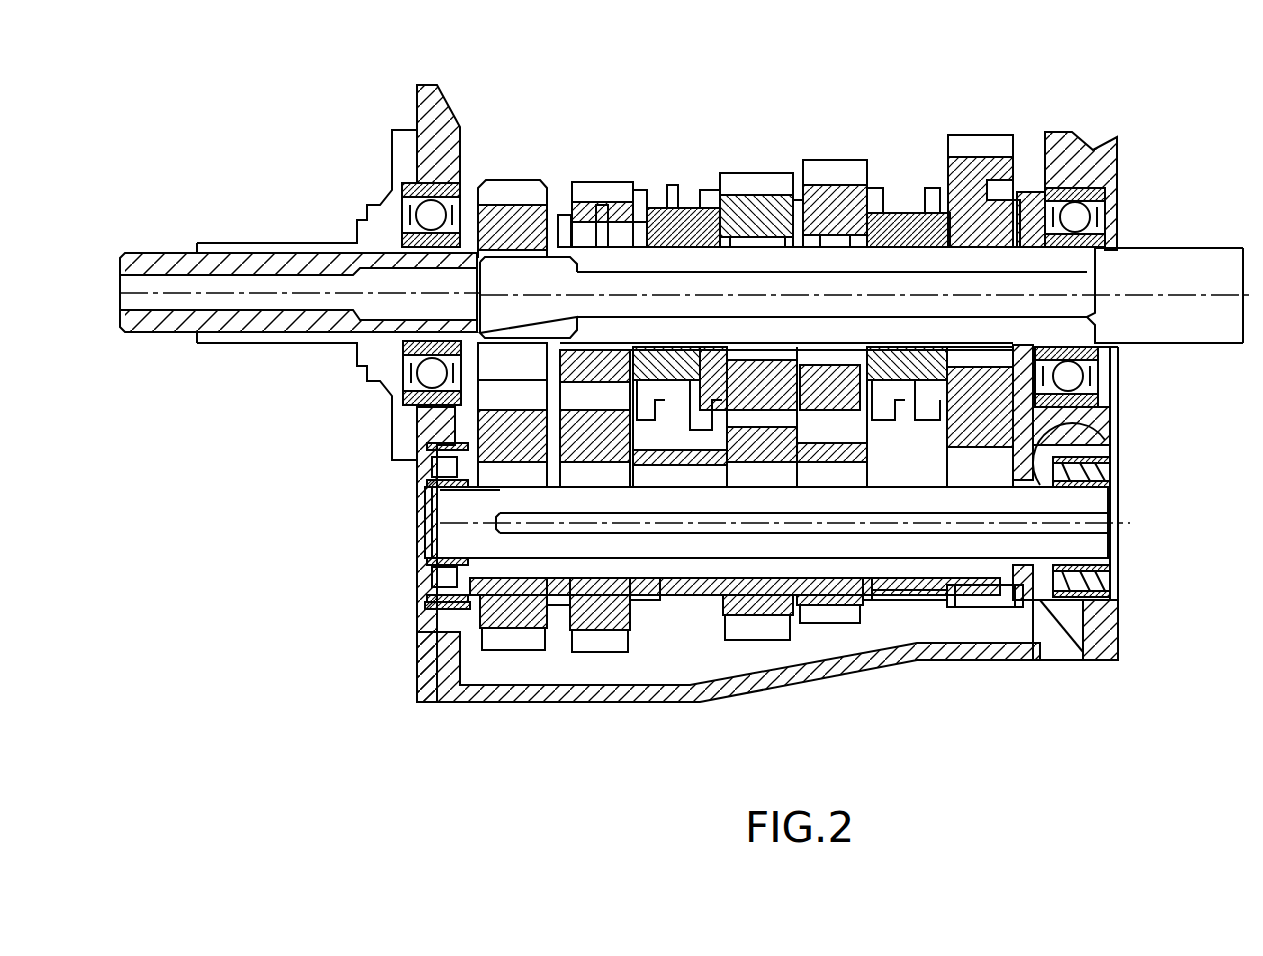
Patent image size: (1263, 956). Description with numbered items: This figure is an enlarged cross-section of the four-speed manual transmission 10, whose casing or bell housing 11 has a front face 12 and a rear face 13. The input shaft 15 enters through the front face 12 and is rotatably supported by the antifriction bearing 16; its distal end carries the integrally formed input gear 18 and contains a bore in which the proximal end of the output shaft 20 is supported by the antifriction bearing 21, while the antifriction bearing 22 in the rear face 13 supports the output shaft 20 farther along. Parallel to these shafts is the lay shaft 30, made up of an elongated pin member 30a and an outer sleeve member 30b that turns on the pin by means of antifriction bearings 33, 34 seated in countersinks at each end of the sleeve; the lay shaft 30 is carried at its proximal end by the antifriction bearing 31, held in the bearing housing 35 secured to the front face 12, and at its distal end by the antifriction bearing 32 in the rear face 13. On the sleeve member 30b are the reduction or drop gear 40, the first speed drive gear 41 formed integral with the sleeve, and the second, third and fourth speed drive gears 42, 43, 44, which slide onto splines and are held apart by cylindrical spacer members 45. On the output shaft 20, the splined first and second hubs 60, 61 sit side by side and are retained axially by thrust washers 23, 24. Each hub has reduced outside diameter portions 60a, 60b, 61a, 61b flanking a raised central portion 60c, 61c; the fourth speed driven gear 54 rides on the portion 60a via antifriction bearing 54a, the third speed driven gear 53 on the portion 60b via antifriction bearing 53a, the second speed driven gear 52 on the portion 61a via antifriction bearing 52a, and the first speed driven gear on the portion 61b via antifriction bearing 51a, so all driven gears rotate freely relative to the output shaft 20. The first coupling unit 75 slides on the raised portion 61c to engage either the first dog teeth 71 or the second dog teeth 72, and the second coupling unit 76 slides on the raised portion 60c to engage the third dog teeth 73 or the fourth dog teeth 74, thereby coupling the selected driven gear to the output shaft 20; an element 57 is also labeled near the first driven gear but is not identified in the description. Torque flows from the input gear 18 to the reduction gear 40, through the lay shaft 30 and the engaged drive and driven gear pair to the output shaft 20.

The manual transmission 10 is at (288, 187).
The casing 11 is at (945, 655).
The front face 12 is at (417, 655).
The rear face 13 is at (1120, 625).
The input shaft 15 is at (145, 262).
The antifriction bearing 16 is at (400, 183).
The input gear 18 is at (508, 190).
The output shaft 20 is at (1160, 267).
The antifriction bearing 21 is at (520, 237).
The antifriction bearing 22 is at (1110, 390).
The thrust washer 23 is at (567, 220).
The thrust washer 24 is at (1032, 247).
The lay shaft 30 is at (1082, 506).
The pin member 30a is at (438, 546).
The outer sleeve member 30b is at (883, 570).
The antifriction bearing 31 is at (423, 590).
The antifriction bearing 32 is at (1100, 573).
The antifriction bearing 33 is at (470, 492).
The antifriction bearing 34 is at (1103, 443).
The bearing housing 35 is at (415, 478).
The reduction gear 40 is at (493, 640).
The first speed drive gear 41 is at (1000, 600).
The second speed drive gear 42 is at (830, 617).
The third speed drive gear 43 is at (753, 632).
The fourth speed drive gear 44 is at (603, 643).
The spacer member 45 is at (547, 600).
The antifriction bearing 51a is at (968, 230).
The second speed driven gear 52 is at (810, 165).
The antifriction bearing 52a is at (845, 230).
The third speed driven gear 53 is at (747, 183).
The antifriction bearing 53a is at (760, 233).
The fourth speed driven gear 54 is at (620, 207).
The antifriction bearing 54a is at (617, 227).
The gear teeth 57 is at (977, 147).
The first hub 60 is at (687, 205).
The reduced outside diameter portion 60a is at (600, 213).
The reduced outside diameter portion 60b is at (703, 240).
The raised central portion 60c is at (673, 220).
The second hub 61 is at (907, 213).
The reduced outside diameter portion 61a is at (845, 228).
The reduced outside diameter portion 61b is at (1020, 230).
The raised central portion 61c is at (890, 200).
The first dog teeth 71 is at (930, 415).
The second dog teeth 72 is at (884, 415).
The third dog teeth 73 is at (703, 415).
The fourth dog teeth 74 is at (648, 415).
The first coupling unit 75 is at (907, 387).
The second coupling unit 76 is at (687, 397).